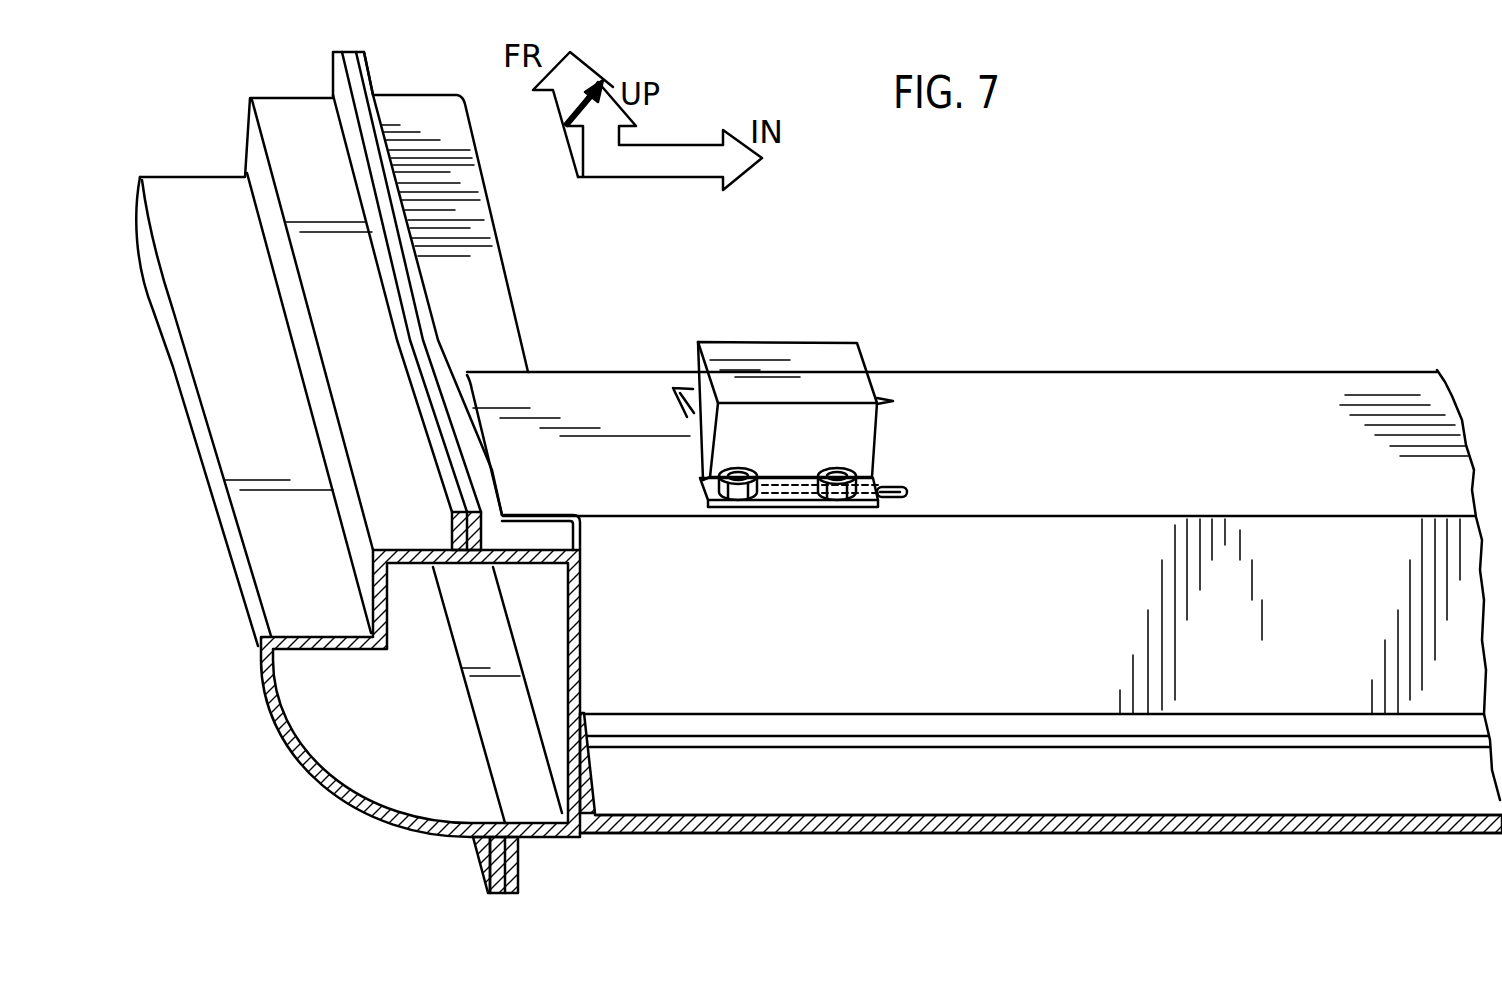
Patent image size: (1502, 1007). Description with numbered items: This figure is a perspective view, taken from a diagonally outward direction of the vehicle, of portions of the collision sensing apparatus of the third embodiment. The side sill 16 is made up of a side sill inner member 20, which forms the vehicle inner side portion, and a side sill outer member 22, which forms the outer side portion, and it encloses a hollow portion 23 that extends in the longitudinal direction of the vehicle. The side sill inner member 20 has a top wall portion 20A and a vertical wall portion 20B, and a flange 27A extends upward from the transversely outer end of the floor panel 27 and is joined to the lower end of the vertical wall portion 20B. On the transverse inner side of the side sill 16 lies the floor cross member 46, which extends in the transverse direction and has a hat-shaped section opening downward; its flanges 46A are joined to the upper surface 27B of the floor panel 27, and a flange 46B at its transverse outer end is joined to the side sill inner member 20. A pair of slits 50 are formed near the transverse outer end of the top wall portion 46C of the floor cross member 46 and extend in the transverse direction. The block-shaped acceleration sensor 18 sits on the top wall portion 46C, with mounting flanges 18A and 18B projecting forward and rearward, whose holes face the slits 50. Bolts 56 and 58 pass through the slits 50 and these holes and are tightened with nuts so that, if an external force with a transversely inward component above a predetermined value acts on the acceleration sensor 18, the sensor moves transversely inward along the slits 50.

The side sill 16 is at (428, 871).
The acceleration sensor 18 is at (815, 342).
The mounting flange 18A is at (681, 398).
The mounting flange 18B is at (704, 490).
The side sill inner member 20 is at (554, 848).
The top wall portion 20A is at (478, 293).
The vertical wall portion 20B is at (580, 680).
The outer panel 22 is at (465, 843).
The hollow portion 23 is at (432, 766).
The floor panel 27 is at (1033, 793).
The flange 27A is at (597, 797).
The upper surface 27B is at (910, 783).
The floor cross member 46 is at (1255, 362).
The flanges 46A is at (925, 718).
The flange 46B is at (581, 533).
The top wall portion 46C is at (1085, 388).
The slits 50 is at (895, 400).
The bolt 56 is at (740, 470).
The bolt 58 is at (836, 470).